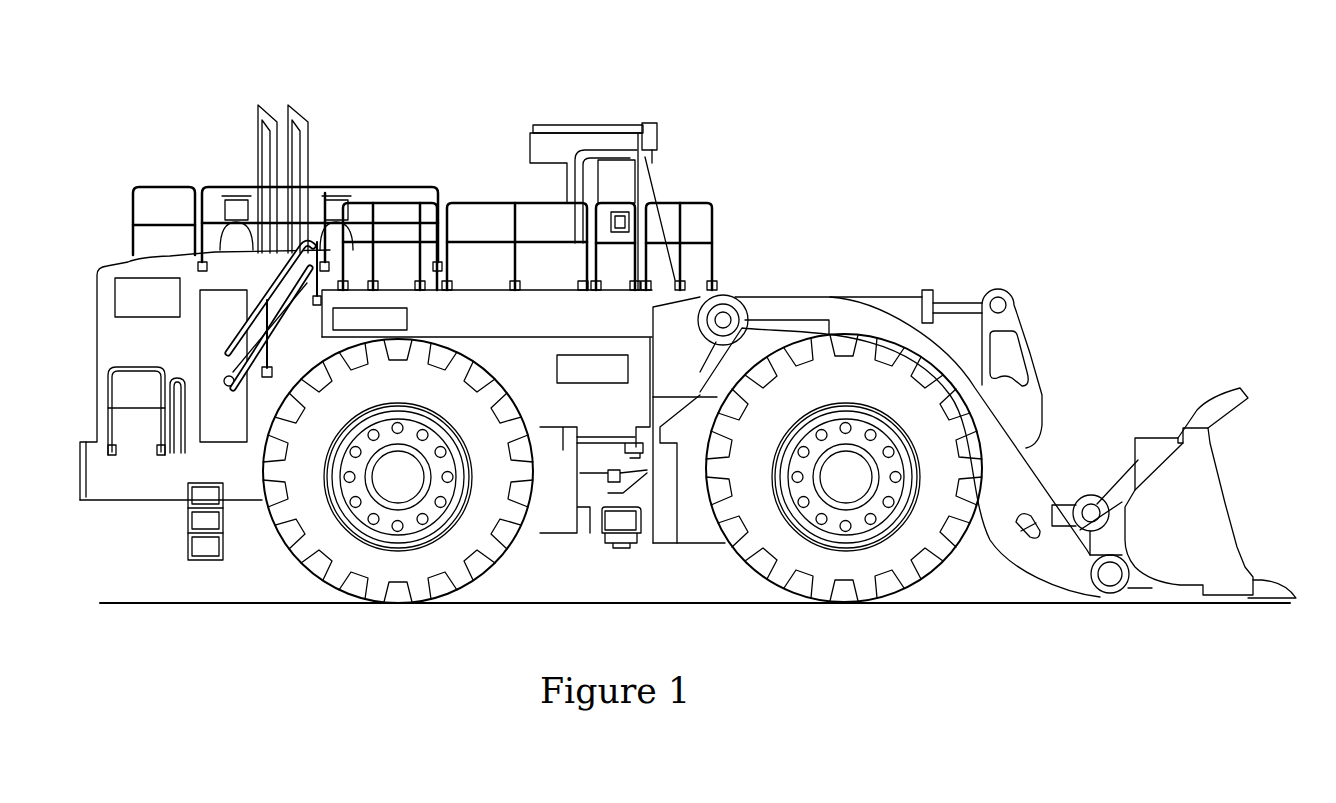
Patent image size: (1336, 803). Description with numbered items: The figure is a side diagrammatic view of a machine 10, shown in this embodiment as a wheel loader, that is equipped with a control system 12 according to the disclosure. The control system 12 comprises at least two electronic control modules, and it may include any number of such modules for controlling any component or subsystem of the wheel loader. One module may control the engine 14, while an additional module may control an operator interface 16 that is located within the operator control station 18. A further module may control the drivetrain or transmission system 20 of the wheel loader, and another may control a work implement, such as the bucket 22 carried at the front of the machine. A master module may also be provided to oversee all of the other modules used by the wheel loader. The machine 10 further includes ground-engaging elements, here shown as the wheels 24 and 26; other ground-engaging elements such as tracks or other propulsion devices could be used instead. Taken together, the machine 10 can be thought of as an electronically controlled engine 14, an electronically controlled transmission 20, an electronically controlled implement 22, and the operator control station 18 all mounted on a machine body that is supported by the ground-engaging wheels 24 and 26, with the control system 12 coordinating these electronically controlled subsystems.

The machine 10 is at (977, 191).
The control system 12 is at (408, 324).
The engine 14 is at (120, 266).
The operator interface 16 is at (617, 218).
The operator control station 18 is at (563, 125).
The drivetrain or transmission system 20 is at (572, 355).
The bucket 22 is at (1162, 436).
The wheel 24 is at (333, 585).
The wheel 26 is at (780, 604).